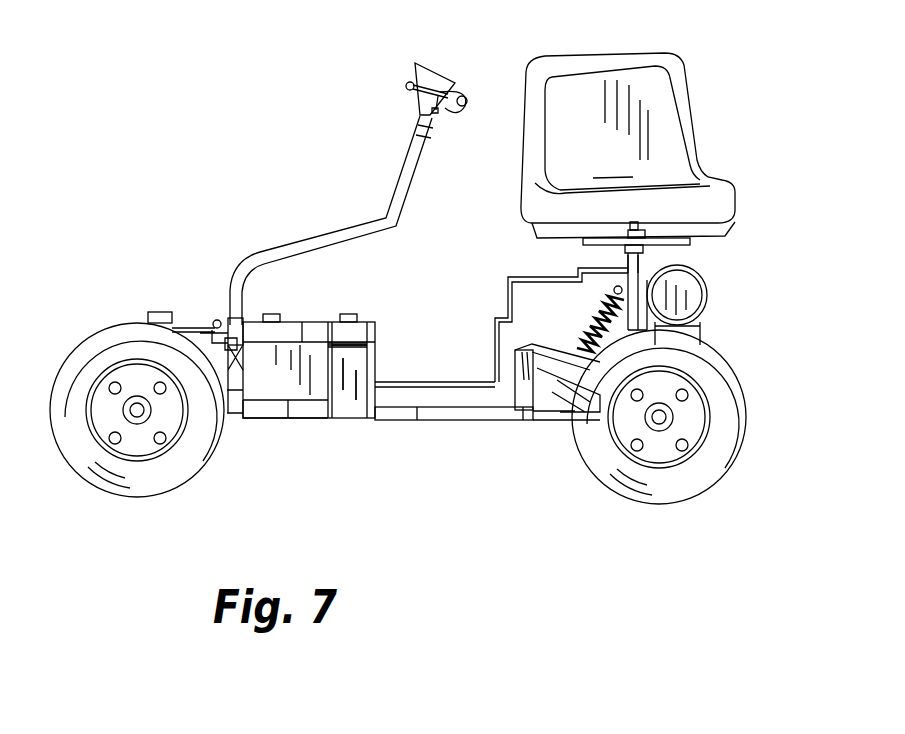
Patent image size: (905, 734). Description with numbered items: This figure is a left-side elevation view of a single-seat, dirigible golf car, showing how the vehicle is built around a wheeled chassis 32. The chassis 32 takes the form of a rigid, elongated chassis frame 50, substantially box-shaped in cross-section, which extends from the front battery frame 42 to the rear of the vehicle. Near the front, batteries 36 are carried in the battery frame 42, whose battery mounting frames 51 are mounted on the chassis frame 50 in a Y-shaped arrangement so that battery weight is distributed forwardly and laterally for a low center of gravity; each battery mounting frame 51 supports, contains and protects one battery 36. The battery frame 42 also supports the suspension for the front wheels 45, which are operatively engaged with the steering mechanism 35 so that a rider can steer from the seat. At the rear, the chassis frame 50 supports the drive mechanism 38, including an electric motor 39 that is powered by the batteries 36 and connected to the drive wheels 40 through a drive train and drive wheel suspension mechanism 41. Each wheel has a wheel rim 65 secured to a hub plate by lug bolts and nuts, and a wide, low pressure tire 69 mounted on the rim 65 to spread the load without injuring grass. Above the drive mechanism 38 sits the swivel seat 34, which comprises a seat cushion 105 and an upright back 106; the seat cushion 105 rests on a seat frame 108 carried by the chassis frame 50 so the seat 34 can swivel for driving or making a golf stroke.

The wheeled chassis 32 is at (430, 385).
The swivel seat 34 is at (685, 102).
The steering mechanism 35 is at (318, 232).
The batteries 36 is at (343, 408).
The drive mechanism 38 is at (707, 326).
The electric motor 39 is at (695, 292).
The drive wheels 40 is at (733, 407).
The drive wheel suspension mechanism 41 is at (562, 382).
The battery frame 42 is at (288, 426).
The front wheels 45 is at (118, 317).
The chassis frame 50 is at (412, 397).
The battery mounting frames 51 is at (377, 350).
The wheel rim 65 is at (137, 442).
The tire 69 is at (200, 445).
The seat cushion 105 is at (573, 210).
The upright back 106 is at (653, 80).
The seat frame 108 is at (680, 240).